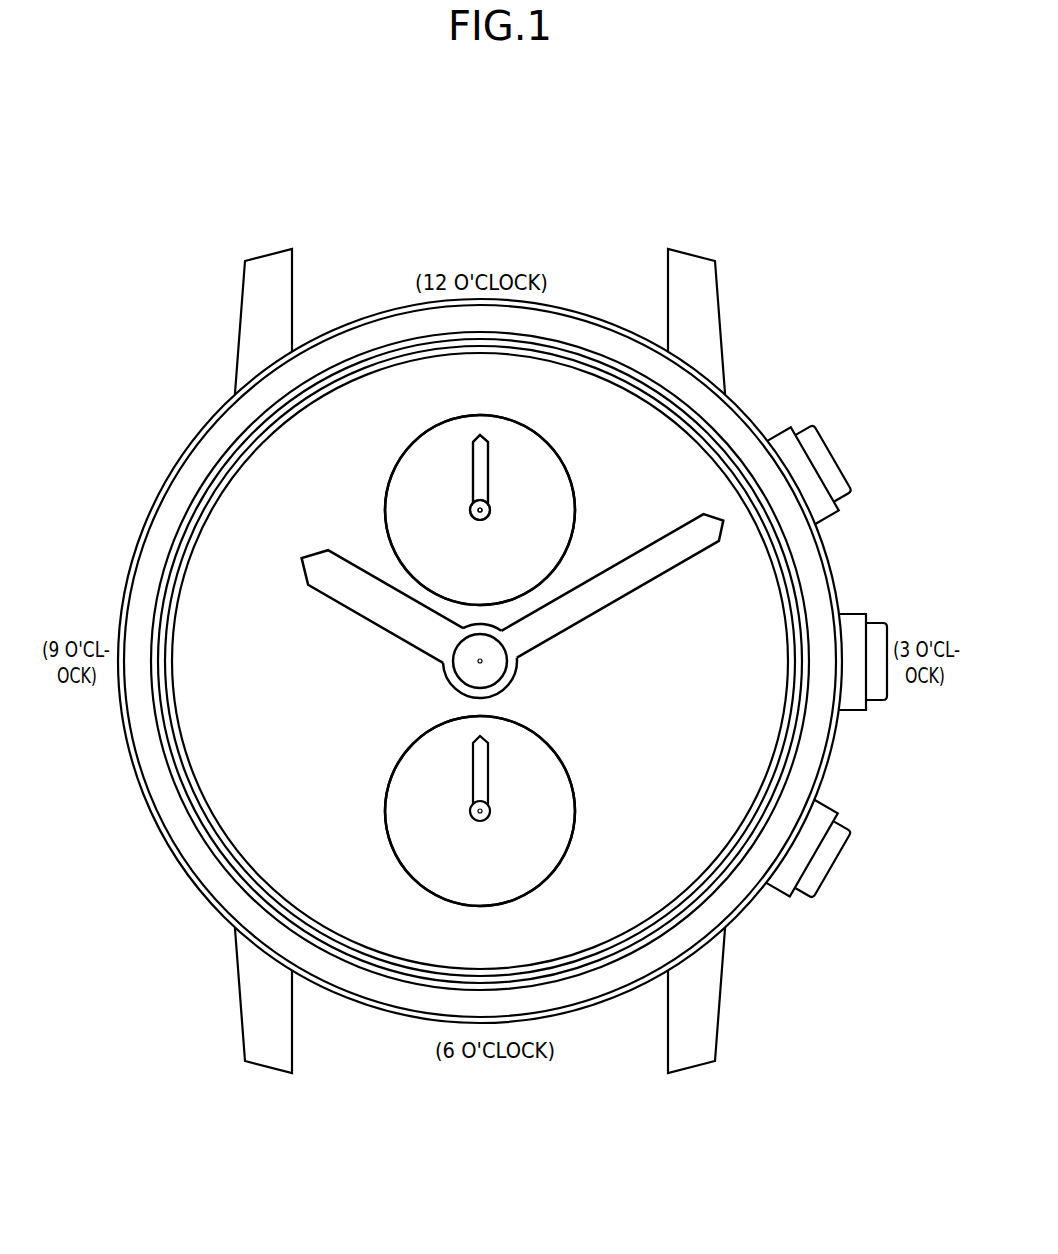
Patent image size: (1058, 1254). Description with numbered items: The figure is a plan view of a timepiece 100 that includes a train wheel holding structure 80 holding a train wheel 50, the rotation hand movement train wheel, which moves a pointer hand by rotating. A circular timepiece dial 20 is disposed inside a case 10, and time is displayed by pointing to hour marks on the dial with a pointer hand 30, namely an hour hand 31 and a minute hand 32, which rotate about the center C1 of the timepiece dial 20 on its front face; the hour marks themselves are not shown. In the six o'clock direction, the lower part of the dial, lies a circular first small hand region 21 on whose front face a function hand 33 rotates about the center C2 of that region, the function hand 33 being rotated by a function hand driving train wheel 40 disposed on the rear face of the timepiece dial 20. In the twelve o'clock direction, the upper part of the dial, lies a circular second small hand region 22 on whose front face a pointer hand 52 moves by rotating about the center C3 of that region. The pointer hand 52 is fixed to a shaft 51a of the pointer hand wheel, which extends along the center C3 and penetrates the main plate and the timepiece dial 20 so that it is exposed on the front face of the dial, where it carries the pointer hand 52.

The timepiece 100 is at (753, 368).
The case 10 is at (810, 570).
The timepiece dial 20 is at (660, 845).
The first small hand region 21 is at (540, 817).
The second small hand region 22 is at (537, 480).
The pointer hand 30 is at (404, 722).
The hour hand 31 is at (362, 593).
The minute hand 32 is at (568, 612).
The function hand 33 is at (478, 780).
The function hand driving train wheel 40 is at (457, 842).
The train wheel 50 is at (448, 500).
The shaft 51a is at (470, 511).
The pointer hand 52 is at (488, 455).
The train wheel holding structure 80 is at (480, 545).
The center C1 is at (482, 658).
The center C2 is at (482, 813).
The center C3 is at (480, 510).